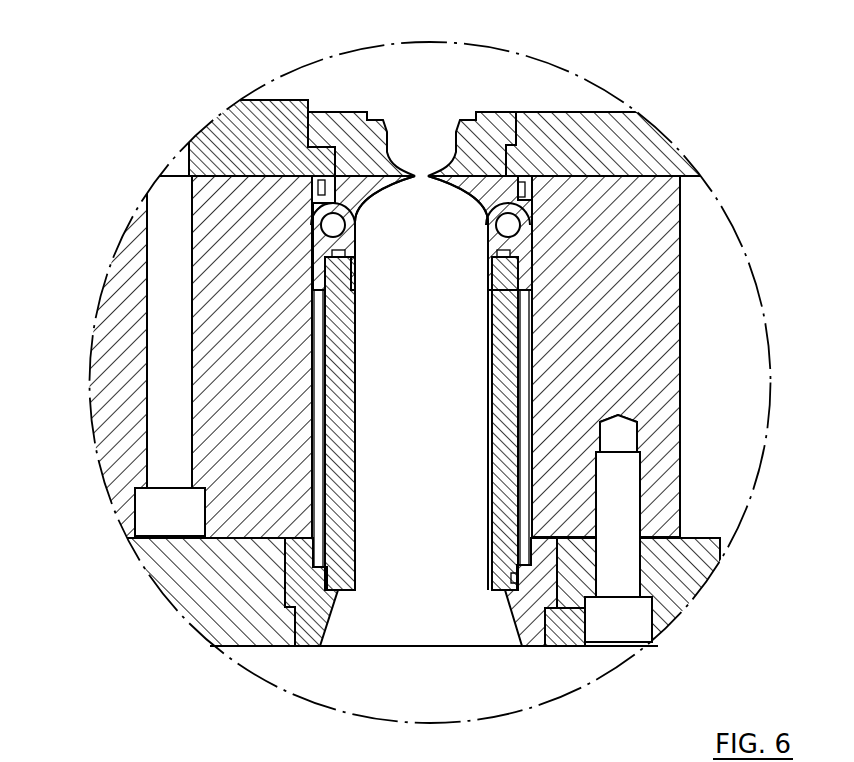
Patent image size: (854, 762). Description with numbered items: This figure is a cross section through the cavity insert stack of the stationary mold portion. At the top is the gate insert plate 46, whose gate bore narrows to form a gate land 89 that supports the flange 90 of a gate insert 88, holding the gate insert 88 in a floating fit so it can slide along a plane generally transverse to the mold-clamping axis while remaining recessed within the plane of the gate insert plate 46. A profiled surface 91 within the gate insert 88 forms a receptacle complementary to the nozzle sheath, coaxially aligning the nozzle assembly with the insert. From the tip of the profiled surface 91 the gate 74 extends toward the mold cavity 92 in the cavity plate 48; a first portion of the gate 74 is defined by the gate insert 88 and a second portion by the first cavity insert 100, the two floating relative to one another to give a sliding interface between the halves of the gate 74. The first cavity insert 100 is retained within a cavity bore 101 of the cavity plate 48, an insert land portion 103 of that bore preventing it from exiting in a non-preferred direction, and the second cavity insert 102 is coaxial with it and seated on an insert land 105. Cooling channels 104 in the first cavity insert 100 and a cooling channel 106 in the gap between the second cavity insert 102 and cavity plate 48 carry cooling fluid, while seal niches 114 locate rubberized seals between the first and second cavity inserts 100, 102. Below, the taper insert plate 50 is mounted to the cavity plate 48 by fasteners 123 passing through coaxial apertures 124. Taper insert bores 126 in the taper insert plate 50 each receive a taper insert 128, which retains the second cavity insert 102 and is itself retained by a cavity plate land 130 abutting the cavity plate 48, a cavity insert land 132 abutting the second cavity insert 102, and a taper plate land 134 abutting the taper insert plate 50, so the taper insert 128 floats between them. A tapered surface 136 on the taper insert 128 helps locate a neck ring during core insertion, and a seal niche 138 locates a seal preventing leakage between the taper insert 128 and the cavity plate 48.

The gate insert plate 46 is at (615, 110).
The cavity plate 48 is at (100, 352).
The taper insert plate 50 is at (130, 556).
The gate 74 is at (424, 181).
The gate insert 88 is at (490, 110).
The gate land 89 is at (518, 128).
The flange 90 is at (308, 110).
The profiled surface 91 is at (383, 127).
The mold cavity 92 is at (434, 405).
The first cavity insert 100 is at (327, 172).
The cavity bore 101 is at (322, 532).
The second cavity insert 102 is at (355, 456).
The insert land portion 103 is at (345, 238).
The cooling channels 104 is at (525, 208).
The insert land 105 is at (352, 250).
The cooling channel 106 is at (367, 215).
The seal niches 114 is at (486, 232).
The fasteners 123 is at (630, 499).
The coaxial apertures 124 is at (642, 465).
The taper insert bores 126 is at (540, 644).
The taper insert 128 is at (310, 646).
The cavity plate land 130 is at (530, 533).
The cavity insert land 132 is at (513, 585).
The taper plate land 134 is at (560, 610).
The tapered surface 136 is at (333, 617).
The seal niche 138 is at (300, 553).